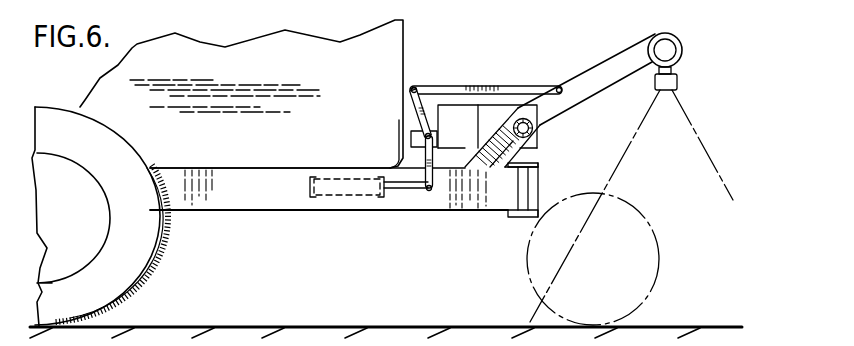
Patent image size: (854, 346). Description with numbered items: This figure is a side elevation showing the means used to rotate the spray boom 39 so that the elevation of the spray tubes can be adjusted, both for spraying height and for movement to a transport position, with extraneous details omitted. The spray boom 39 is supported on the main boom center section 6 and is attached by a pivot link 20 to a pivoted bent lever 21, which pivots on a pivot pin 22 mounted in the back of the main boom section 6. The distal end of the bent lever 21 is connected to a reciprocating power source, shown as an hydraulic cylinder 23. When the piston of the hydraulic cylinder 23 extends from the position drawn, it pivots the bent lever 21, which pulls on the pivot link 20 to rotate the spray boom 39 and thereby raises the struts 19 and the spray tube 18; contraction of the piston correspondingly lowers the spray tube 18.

The main boom center section 6 is at (540, 189).
The spray tube 18 is at (675, 34).
The struts 19 is at (610, 60).
The pivot link 20 is at (457, 86).
The bent lever 21 is at (417, 119).
The pivot pin 22 is at (422, 137).
The hydraulic cylinder 23 is at (350, 196).
The spray boom 39 is at (524, 118).